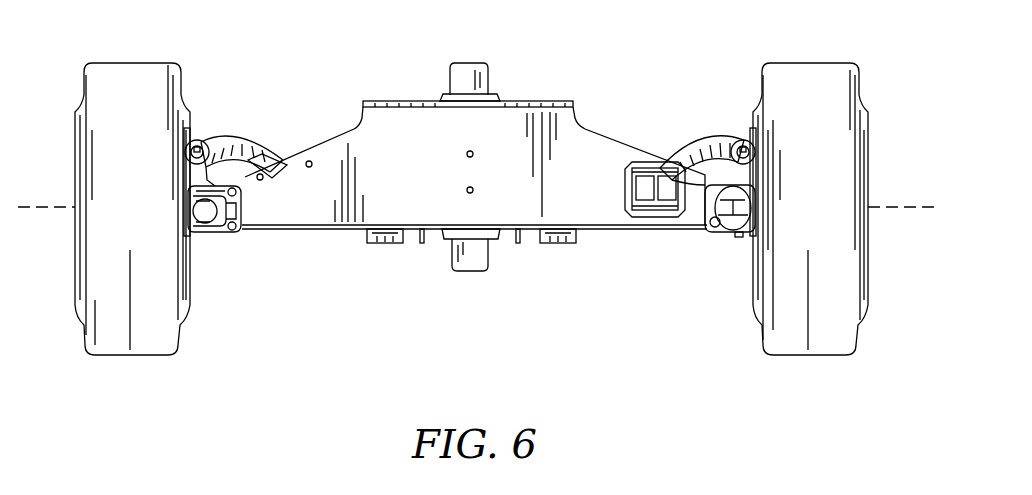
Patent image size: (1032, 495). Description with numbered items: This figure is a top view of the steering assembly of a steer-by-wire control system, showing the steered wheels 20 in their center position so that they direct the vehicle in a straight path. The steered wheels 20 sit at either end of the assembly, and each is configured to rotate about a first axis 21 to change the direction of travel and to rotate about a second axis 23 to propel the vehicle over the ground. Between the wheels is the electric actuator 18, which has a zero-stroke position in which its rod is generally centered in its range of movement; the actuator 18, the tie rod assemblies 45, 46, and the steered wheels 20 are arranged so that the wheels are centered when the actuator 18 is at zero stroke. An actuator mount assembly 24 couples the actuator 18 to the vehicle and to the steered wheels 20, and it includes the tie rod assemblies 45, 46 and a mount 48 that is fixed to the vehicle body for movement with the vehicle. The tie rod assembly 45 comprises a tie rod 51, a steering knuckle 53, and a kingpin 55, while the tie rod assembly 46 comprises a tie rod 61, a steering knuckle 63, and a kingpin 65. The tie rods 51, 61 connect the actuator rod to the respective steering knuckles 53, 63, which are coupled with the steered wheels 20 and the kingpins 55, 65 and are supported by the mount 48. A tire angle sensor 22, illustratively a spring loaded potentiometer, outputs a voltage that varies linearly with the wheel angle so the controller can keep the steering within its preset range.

The actuator 18 is at (422, 157).
The steered wheels 20 is at (132, 72).
The first axis 21 is at (728, 232).
The tire angle sensor 22 is at (207, 210).
The second axis 23 is at (905, 207).
The actuator mount assembly 24 is at (565, 132).
The tie rod assembly 45 is at (715, 150).
The tie rod assembly 46 is at (232, 147).
The mount 48 is at (573, 213).
The tie rod 51 is at (684, 160).
The steering knuckle 53 is at (742, 168).
The kingpin 55 is at (742, 238).
The tie rod 61 is at (203, 140).
The steering knuckle 63 is at (208, 173).
The kingpin 65 is at (240, 222).